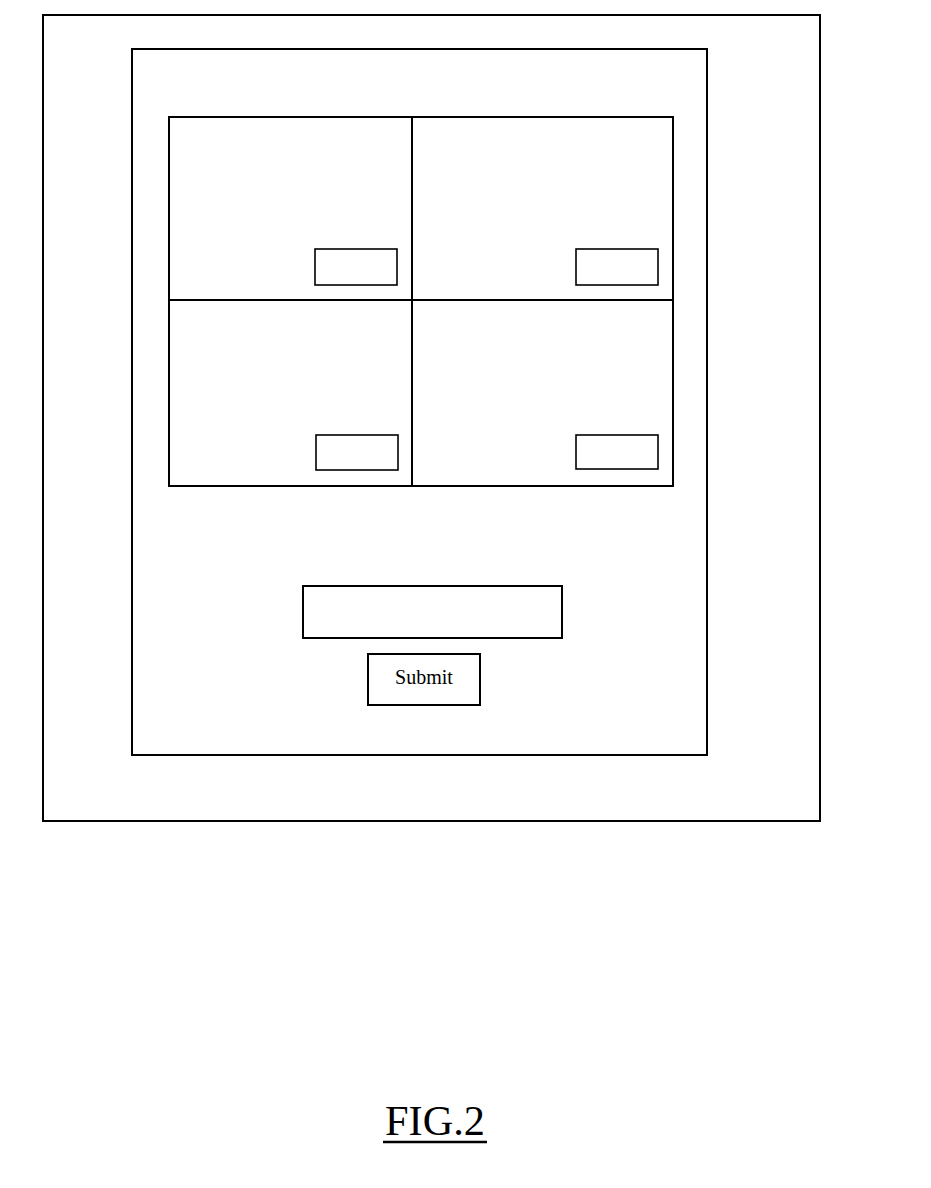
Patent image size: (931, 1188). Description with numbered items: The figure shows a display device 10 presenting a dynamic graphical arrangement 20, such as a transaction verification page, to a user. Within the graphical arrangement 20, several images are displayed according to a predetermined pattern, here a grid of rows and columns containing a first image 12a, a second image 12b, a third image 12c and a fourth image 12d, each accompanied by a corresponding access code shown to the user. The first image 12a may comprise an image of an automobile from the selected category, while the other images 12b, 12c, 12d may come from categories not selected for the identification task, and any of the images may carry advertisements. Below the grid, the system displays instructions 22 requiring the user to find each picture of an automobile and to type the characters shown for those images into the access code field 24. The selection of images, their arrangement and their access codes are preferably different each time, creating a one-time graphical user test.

The display device 10 is at (595, 821).
The graphical arrangement 20 is at (288, 755).
The image 1 12a is at (169, 183).
The image 2 12b is at (673, 165).
The image 3 12c is at (169, 443).
The image 4 12d is at (642, 486).
The instructions 22 is at (161, 524).
The access code field 24 is at (496, 638).